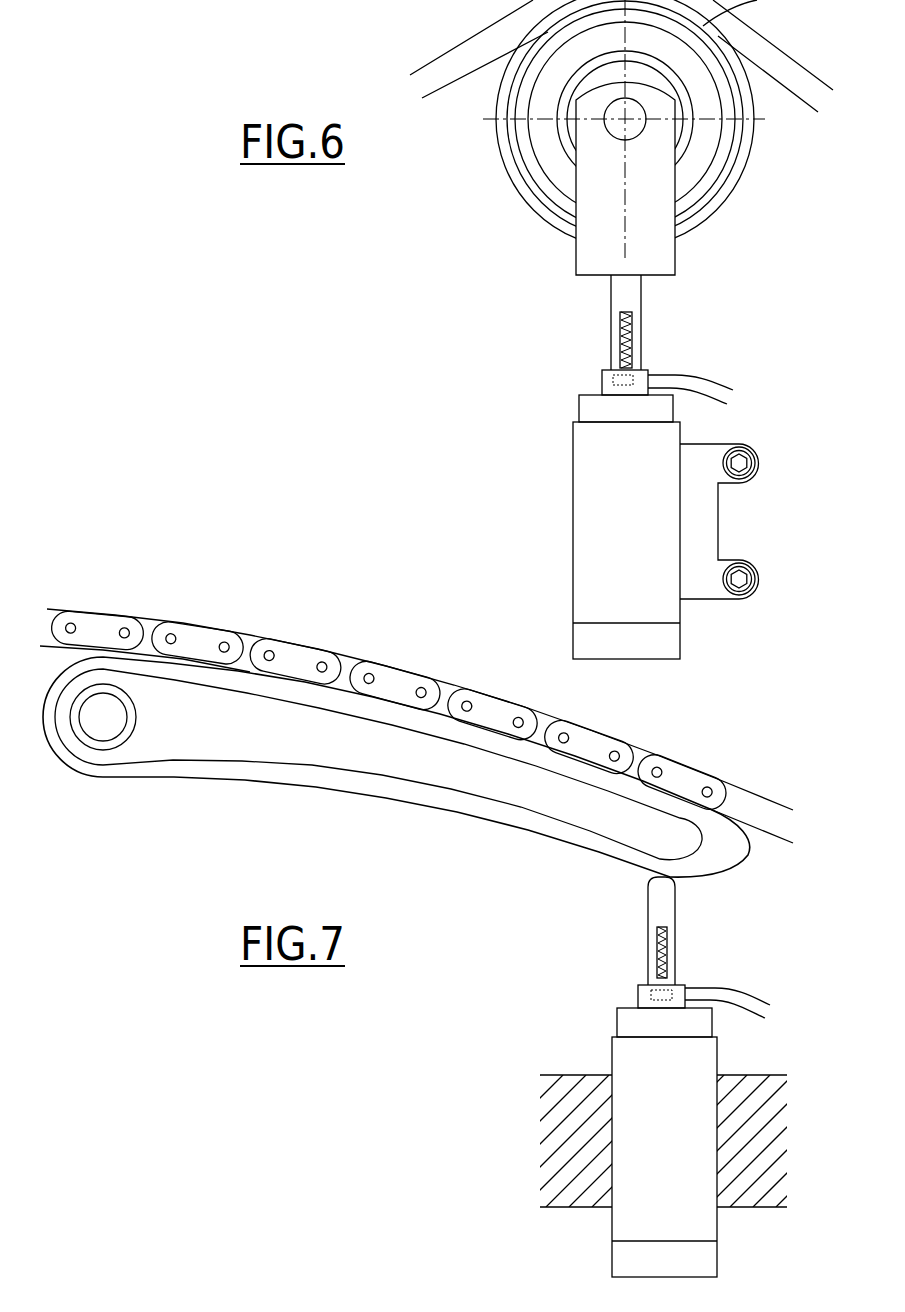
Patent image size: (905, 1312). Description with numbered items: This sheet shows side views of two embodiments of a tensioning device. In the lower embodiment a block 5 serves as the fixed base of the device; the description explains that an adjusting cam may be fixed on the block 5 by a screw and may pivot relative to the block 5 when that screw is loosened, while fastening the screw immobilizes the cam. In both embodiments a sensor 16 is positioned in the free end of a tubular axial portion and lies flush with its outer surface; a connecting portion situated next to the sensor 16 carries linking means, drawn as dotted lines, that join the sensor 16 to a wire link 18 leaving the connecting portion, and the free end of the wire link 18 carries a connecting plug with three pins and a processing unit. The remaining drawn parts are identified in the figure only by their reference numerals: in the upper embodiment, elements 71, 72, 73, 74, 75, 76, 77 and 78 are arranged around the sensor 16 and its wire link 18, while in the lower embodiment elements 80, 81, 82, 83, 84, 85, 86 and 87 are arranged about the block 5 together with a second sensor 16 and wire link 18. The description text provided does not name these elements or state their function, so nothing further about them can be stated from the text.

In FIG. 7, the block 5 is at (580, 1138).
In FIG. 6, the sensor 16 is at (602, 378).
In FIG. 7, the sensor 16 is at (638, 990).
In FIG. 6, the wire link 18 is at (703, 387).
In FIG. 6, the actuator 71 is at (565, 522).
In FIG. 6, the actuator housing 72 is at (620, 465).
In FIG. 6, the actuator rod 73 is at (628, 295).
In FIG. 6, the chain 74 is at (778, 68).
In FIG. 6, the pulley hub 75 is at (602, 253).
In FIG. 6, the pulley 76 is at (573, 247).
In FIG. 6, the pulley shaft 77 is at (613, 124).
In FIG. 6, the spring 78 is at (623, 341).
In FIG. 7, the chain 80 is at (292, 657).
In FIG. 7, the swing arm 81 is at (242, 776).
In FIG. 7, the pivot pin 82 is at (103, 722).
In FIG. 7, the bushing 83 is at (120, 741).
In FIG. 7, the actuator cap 84 is at (600, 1039).
In FIG. 7, the actuator housing 85 is at (663, 1078).
In FIG. 7, the actuator rod 86 is at (661, 900).
In FIG. 7, the spring 87 is at (657, 952).